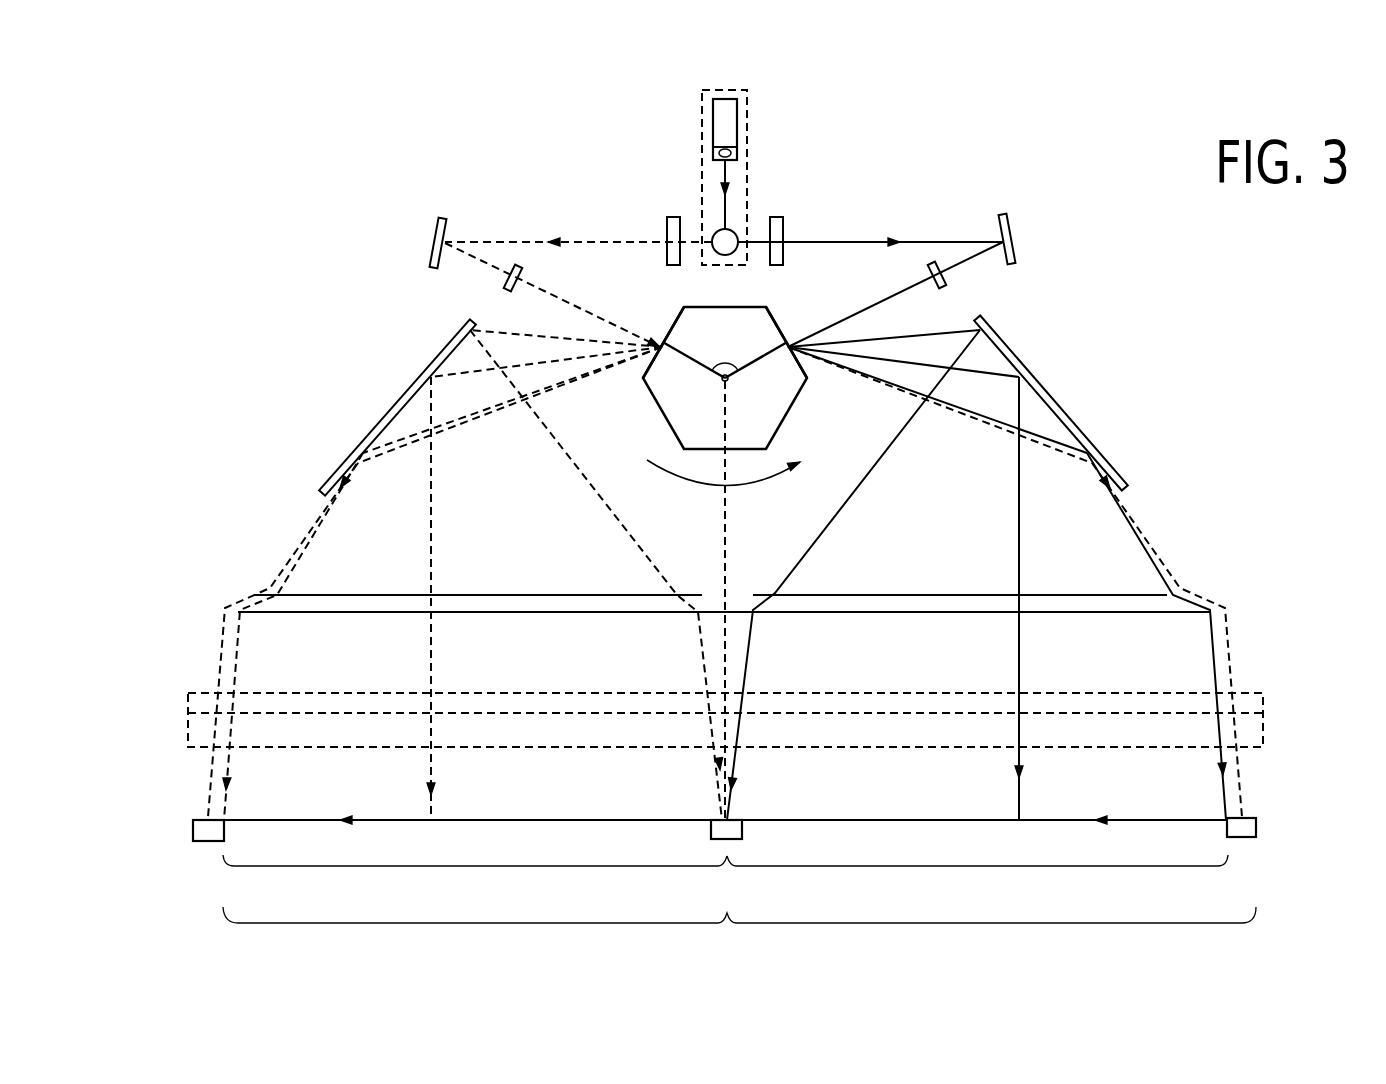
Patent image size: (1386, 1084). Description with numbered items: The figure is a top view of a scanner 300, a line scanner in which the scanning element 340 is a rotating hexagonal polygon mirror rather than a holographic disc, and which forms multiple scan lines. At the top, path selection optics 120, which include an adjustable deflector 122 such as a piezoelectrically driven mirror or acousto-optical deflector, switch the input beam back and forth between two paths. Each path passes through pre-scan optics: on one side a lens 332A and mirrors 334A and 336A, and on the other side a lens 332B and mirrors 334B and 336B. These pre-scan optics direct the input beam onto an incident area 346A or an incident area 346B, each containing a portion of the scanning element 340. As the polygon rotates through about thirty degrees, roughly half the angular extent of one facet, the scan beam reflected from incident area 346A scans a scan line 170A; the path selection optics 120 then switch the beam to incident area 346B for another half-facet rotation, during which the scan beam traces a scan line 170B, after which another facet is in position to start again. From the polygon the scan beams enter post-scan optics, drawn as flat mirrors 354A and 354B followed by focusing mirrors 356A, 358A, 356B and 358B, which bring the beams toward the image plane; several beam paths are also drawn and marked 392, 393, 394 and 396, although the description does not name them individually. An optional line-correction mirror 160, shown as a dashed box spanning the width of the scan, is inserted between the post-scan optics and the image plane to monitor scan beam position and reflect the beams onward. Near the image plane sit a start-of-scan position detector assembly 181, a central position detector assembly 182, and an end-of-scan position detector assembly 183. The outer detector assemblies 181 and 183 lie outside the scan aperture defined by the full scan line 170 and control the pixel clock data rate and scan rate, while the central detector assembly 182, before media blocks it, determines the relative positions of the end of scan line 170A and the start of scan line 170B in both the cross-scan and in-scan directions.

The scanner 300 is at (205, 185).
The path selection optics 120 is at (702, 170).
The adjustable deflector 122 is at (737, 124).
The lens 332B is at (663, 232).
The lens 332A is at (785, 232).
The mirror 334B is at (447, 218).
The mirror 334A is at (1003, 213).
The mirror 336B is at (527, 274).
The mirror 336A is at (925, 272).
The scanning element 340 is at (708, 308).
The incident area 346B is at (660, 344).
The incident area 346A is at (790, 344).
The flat mirror 354B is at (393, 407).
The flat mirror 354A is at (1058, 400).
The focusing mirror 356B is at (313, 597).
The focusing mirror 356A is at (1037, 593).
The focusing mirror 358B is at (313, 614).
The focusing mirror 358A is at (1037, 612).
The light beam 392 is at (1127, 516).
The light beam 393 is at (848, 503).
The light beam 394 is at (603, 502).
The light beam 396 is at (323, 520).
The line-correction mirror 160 is at (1265, 695).
The start-of-scan position detector assembly 181 is at (1245, 836).
The central position detector assembly 182 is at (742, 832).
The end-of-scan position detector assembly 183 is at (200, 842).
The scan line 170 is at (739, 939).
The scan line 170A is at (977, 879).
The scan line 170B is at (475, 881).